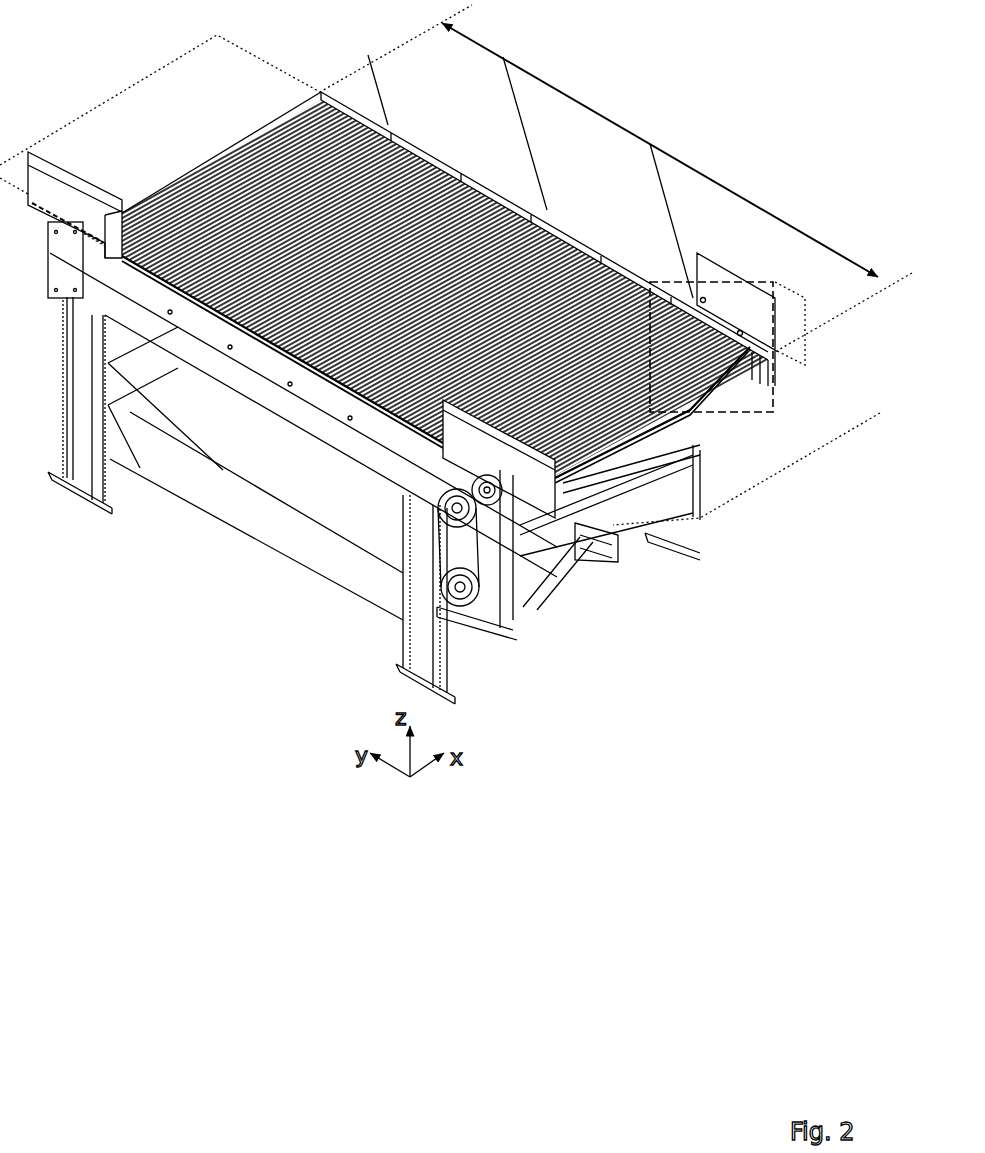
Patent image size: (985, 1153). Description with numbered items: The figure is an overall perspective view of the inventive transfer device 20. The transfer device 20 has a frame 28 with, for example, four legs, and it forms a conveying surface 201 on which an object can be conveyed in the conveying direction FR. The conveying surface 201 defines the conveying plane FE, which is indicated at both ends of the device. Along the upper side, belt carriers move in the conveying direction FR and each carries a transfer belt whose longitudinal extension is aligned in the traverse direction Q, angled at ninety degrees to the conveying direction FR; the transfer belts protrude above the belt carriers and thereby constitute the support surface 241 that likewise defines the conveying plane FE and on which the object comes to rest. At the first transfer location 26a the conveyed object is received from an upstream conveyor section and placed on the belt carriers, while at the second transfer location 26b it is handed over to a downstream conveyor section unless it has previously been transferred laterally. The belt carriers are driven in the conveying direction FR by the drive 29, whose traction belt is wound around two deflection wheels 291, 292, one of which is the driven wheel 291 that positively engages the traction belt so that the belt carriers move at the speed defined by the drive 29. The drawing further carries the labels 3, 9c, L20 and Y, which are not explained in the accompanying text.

The transfer device 20 is at (737, 142).
The conveying surface 201 is at (425, 291).
The support surface 241 is at (452, 282).
The first transfer location 26a is at (751, 324).
The second transfer location 26b is at (252, 86).
The frame 28 is at (303, 412).
The drive 29 is at (565, 604).
The driven wheel 291 is at (567, 560).
The deflection wheel 292 is at (447, 545).
The conveyor segment 3 is at (458, 144).
The detection region 9c is at (776, 292).
The conveyor length L20 is at (518, 63).
The conveying plane FE is at (78, 140).
The conveying direction FR is at (182, 158).
The traverse direction Q is at (512, 133).
The region Y is at (776, 375).